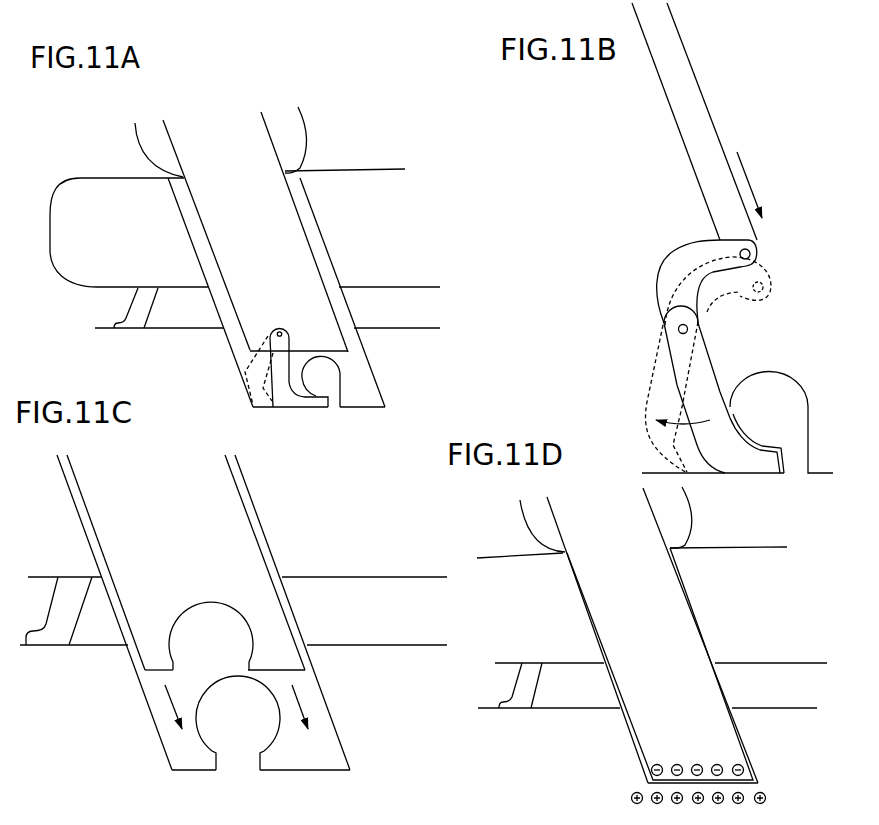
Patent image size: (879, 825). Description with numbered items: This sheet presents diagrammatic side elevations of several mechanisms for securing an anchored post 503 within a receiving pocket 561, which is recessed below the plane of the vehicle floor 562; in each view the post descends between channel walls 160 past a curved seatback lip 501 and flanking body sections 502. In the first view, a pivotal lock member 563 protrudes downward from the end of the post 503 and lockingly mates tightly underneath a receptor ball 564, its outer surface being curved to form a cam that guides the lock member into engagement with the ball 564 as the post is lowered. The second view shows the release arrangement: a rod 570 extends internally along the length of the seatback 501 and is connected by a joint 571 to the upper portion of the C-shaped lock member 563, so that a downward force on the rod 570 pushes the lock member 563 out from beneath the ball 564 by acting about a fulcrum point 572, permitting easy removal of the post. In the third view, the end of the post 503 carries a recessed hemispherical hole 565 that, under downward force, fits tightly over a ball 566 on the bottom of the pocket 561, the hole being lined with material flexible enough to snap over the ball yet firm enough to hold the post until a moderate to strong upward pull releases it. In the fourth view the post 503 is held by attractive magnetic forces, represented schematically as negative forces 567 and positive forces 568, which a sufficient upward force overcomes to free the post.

In FIG. 11A, the channel side wall 160 is at (186, 247).
In FIG. 11A, the seatback 501 is at (150, 137).
In FIG. 11D, the seatback 501 is at (537, 517).
In FIG. 11A, the body section 502 is at (227, 228).
In FIG. 11C, the body section 502 is at (237, 540).
In FIG. 11D, the body section 502 is at (632, 571).
In FIG. 11A, the post 503 is at (275, 197).
In FIG. 11C, the post 503 is at (172, 517).
In FIG. 11D, the post 503 is at (648, 565).
In FIG. 11A, the receiving pocket 561 is at (253, 259).
In FIG. 11C, the receiving pocket 561 is at (148, 707).
In FIG. 11D, the receiving pocket 561 is at (624, 727).
In FIG. 11A, the vehicle floor 562 is at (415, 328).
In FIG. 11C, the vehicle floor 562 is at (387, 643).
In FIG. 11D, the vehicle floor 562 is at (777, 704).
In FIG. 11A, the pivotal lock member 563 is at (294, 357).
In FIG. 11B, the pivotal lock member 563 is at (700, 372).
In FIG. 11A, the receptor ball 564 is at (330, 375).
In FIG. 11B, the receptor ball 564 is at (737, 422).
In FIG. 11C, the recessed hemispherical hole 565 is at (196, 619).
In FIG. 11C, the ball 566 is at (238, 723).
In FIG. 11D, the negative forces 567 is at (734, 769).
In FIG. 11D, the positive forces 568 is at (724, 799).
In FIG. 11B, the rod 570 is at (693, 100).
In FIG. 11B, the joint 571 is at (760, 248).
In FIG. 11B, the fulcrum point 572 is at (678, 328).